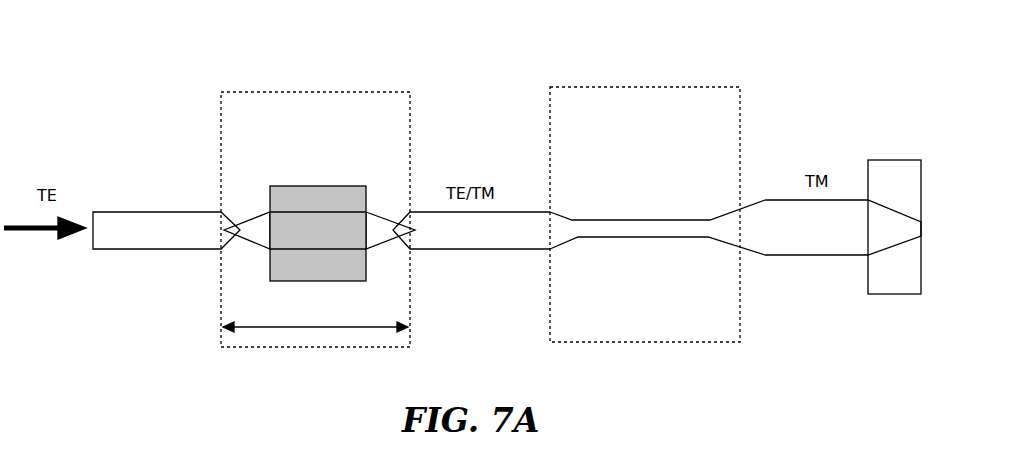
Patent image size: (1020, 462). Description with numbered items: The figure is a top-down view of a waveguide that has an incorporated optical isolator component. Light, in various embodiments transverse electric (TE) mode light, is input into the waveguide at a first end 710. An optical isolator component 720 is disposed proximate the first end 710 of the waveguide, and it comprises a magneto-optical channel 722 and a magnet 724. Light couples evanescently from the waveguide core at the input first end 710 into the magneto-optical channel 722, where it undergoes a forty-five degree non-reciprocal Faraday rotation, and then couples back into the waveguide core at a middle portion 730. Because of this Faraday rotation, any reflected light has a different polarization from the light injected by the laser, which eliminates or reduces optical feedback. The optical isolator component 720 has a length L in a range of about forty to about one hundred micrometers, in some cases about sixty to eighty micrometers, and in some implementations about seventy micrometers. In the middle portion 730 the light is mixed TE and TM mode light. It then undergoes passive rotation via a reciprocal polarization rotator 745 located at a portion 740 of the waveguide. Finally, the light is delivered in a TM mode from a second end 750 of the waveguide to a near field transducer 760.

The first end 710 is at (165, 210).
The optical isolator component 720 is at (277, 92).
The magneto-optical channel 722 is at (248, 214).
The magnet 724 is at (316, 186).
The middle portion 730 is at (428, 210).
The portion 740 is at (601, 86).
The reciprocal polarization rotator 745 is at (613, 218).
The second end 750 is at (773, 198).
The near field transducer 760 is at (880, 158).